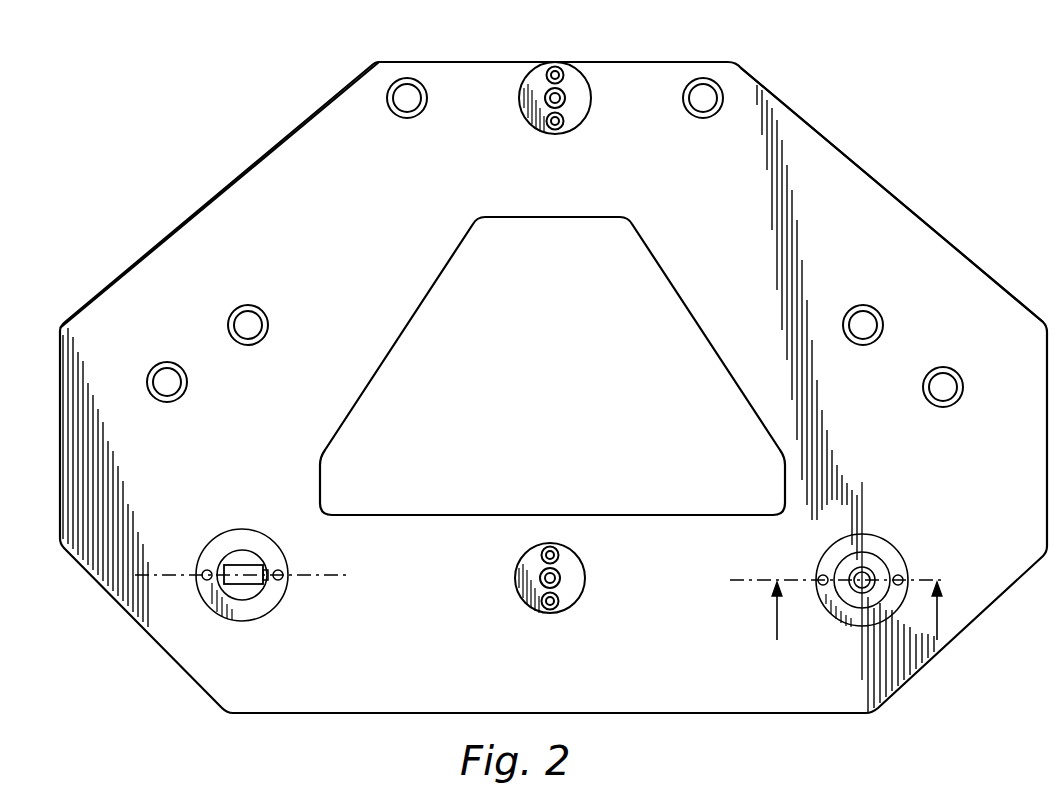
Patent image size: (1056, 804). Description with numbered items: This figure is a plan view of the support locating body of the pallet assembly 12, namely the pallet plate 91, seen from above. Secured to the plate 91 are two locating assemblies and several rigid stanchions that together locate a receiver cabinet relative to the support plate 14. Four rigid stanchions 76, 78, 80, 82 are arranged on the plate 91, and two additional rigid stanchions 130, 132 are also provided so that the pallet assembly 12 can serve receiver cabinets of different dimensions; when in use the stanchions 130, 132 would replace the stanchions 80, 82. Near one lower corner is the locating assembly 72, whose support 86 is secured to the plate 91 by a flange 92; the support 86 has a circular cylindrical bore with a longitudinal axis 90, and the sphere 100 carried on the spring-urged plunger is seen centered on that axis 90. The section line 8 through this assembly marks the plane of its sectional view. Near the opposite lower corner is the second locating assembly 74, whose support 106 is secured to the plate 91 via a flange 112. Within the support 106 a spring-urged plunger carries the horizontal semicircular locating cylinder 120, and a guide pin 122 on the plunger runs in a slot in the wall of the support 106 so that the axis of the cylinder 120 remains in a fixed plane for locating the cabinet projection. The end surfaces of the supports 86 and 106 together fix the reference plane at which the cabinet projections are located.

The pallet assembly 12 is at (835, 120).
The support plate 14 is at (330, 103).
The pallet plate 91 is at (866, 181).
The rigid stanchion 82 is at (412, 118).
The rigid stanchion 80 is at (707, 118).
The additional rigid stanchion 132 is at (266, 330).
The additional rigid stanchion 130 is at (881, 332).
The rigid stanchion 78 is at (185, 387).
The rigid stanchion 76 is at (970, 388).
The second locating assembly 74 is at (261, 558).
The flange 112 is at (216, 547).
The support 106 is at (226, 592).
The horizontal semicircular locating cylinder 120 is at (240, 567).
The guide pin 122 is at (268, 582).
The locating assembly 72 is at (859, 581).
The flange 92 is at (884, 552).
The sphere 100 is at (856, 565).
The longitudinal axis 90 is at (875, 577).
The support 86 is at (848, 566).
The section line 8- 8 is at (857, 612).